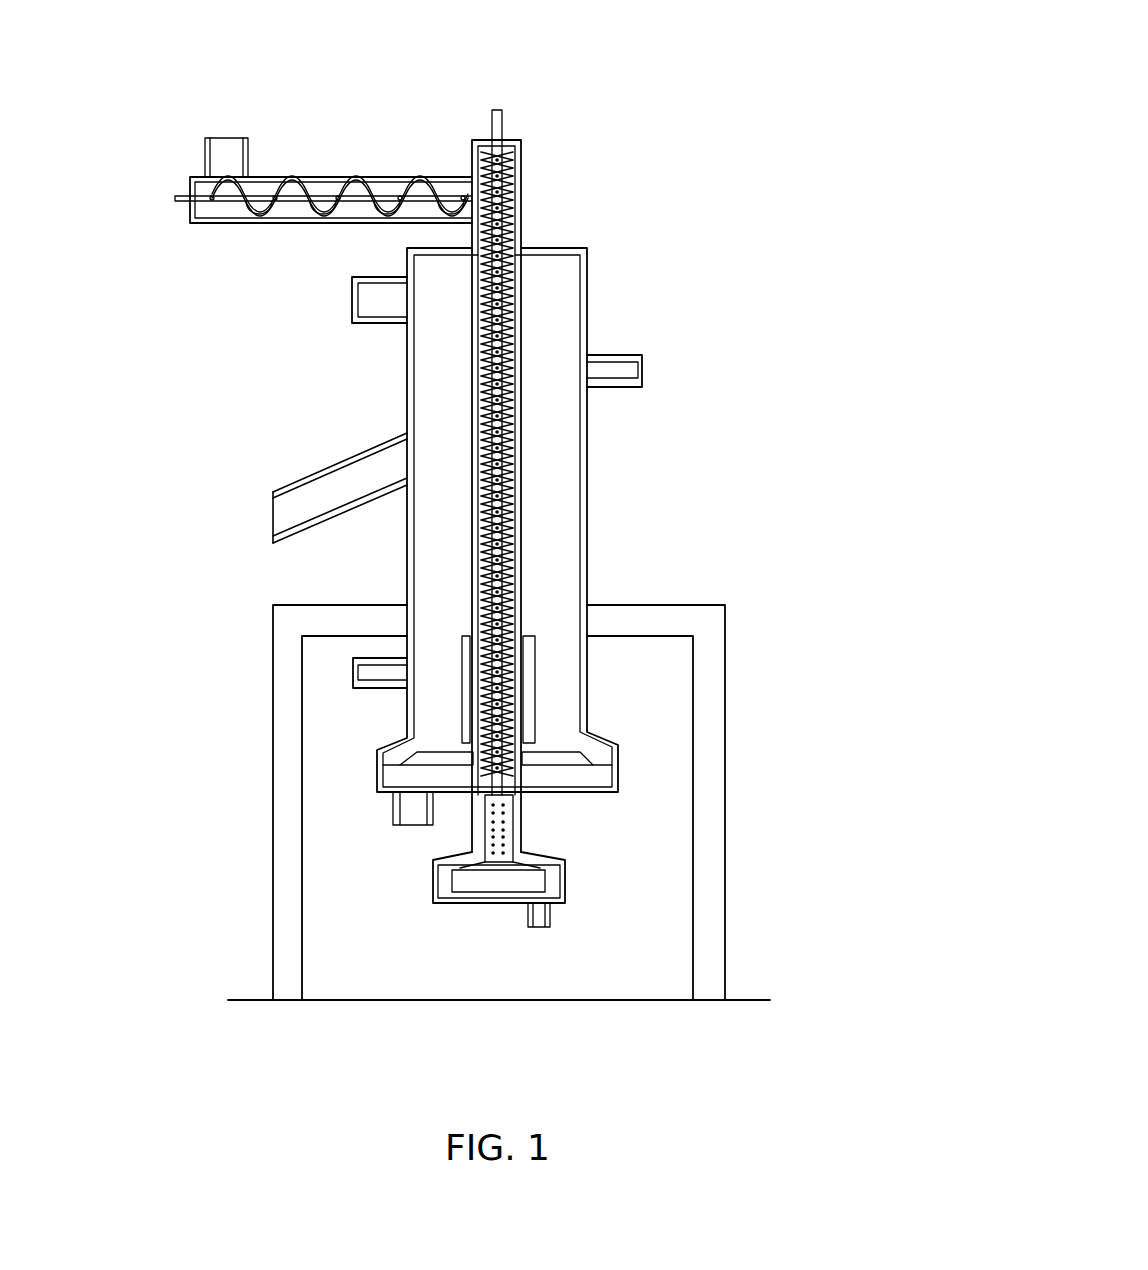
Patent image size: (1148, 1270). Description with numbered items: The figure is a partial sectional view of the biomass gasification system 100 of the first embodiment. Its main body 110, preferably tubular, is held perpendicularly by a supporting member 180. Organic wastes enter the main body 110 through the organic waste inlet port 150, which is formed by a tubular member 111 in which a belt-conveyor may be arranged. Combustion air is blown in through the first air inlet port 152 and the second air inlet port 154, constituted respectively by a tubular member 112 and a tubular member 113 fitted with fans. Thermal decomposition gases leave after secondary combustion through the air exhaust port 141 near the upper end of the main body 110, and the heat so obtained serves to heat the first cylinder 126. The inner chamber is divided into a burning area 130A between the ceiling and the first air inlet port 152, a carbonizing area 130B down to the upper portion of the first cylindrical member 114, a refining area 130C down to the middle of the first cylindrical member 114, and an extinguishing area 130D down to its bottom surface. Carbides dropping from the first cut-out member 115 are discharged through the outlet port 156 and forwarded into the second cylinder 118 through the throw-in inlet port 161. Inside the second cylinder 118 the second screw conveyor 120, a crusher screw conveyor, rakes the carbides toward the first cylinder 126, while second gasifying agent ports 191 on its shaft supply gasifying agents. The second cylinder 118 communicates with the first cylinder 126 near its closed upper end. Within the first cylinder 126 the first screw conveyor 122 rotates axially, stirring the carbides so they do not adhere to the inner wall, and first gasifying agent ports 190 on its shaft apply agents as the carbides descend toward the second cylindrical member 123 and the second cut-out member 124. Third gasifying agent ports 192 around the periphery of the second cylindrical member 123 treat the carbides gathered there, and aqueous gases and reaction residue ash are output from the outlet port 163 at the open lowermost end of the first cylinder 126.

The biomass gasification system 100 is at (590, 38).
The main body 110 is at (588, 255).
The tubular member 111 is at (328, 467).
The tubular member 112 is at (623, 358).
The tubular member 113 is at (392, 658).
The first cylindrical member 114 is at (535, 637).
The first cut-out member 115 is at (618, 755).
The second cylinder 118 is at (315, 175).
The second screw conveyor 120 is at (255, 222).
The first screw conveyor 122 is at (502, 127).
The second cylindrical member 123 is at (510, 840).
The second cut-out member 124 is at (525, 863).
The first cylinder 126 is at (522, 160).
The burning area 130A is at (542, 293).
The carbonizing area 130B is at (542, 487).
The refining area 130C is at (555, 670).
The extinguishing area 130D is at (555, 720).
The air exhaust port 141 is at (358, 300).
The organic waste inlet port 150 is at (290, 508).
The first air inlet port 152 is at (637, 368).
The second air inlet port 154 is at (373, 673).
The outlet port 156 is at (412, 818).
The throw-in inlet port 161 is at (240, 150).
The outlet port 163 is at (548, 922).
The supporting member 180 is at (725, 672).
The first gasifying agent ports 190 is at (505, 165).
The second gasifying agent ports 191 is at (400, 190).
The third gasifying agent ports 192 is at (503, 820).